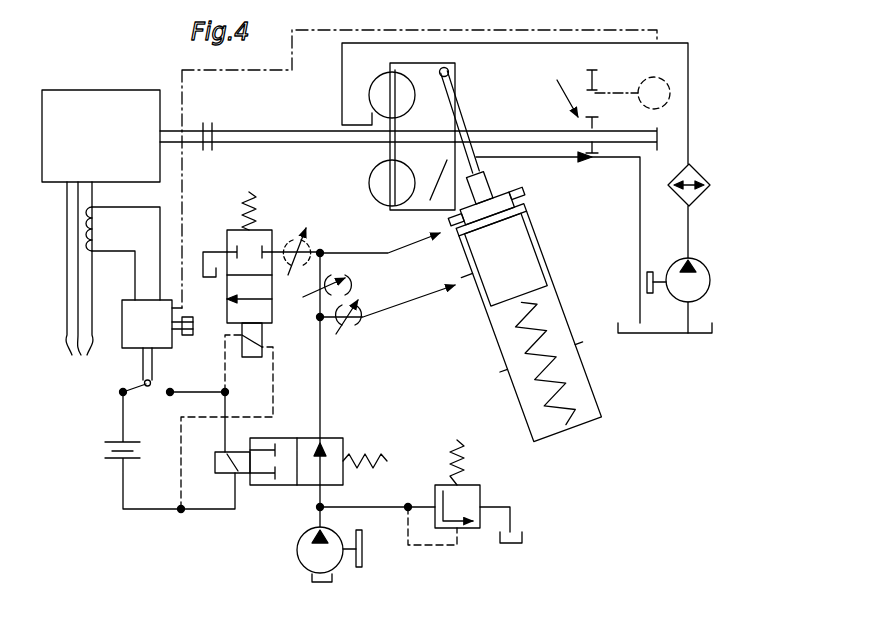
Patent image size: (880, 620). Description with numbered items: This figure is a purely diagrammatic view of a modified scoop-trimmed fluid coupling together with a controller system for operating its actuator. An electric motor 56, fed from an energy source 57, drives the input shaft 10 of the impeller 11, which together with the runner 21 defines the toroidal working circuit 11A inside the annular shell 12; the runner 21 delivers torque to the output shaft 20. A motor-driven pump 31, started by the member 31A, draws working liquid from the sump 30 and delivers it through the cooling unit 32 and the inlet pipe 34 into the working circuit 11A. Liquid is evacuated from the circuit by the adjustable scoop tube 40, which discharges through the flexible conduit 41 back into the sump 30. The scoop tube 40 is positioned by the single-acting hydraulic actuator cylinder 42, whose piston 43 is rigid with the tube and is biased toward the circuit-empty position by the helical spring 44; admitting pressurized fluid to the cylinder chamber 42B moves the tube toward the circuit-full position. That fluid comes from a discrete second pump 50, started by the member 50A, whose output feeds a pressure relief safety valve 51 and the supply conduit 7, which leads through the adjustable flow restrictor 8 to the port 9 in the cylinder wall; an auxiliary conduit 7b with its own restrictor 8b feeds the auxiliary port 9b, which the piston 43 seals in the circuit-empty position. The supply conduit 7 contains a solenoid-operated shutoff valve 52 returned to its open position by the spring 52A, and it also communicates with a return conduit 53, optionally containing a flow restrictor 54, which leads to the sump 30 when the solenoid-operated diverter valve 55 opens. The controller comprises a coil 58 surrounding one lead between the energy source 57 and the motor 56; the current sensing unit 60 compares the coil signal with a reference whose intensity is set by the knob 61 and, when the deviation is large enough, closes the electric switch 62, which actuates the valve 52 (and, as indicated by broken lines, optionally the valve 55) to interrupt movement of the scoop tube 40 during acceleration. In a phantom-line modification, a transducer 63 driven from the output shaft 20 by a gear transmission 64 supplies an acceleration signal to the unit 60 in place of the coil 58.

The supply conduit 7 is at (357, 253).
The auxiliary conduit 7b is at (394, 309).
The adjustable flow restrictor 8 is at (331, 275).
The adjustable flow restrictor 8b is at (349, 328).
The port 9 is at (440, 235).
The auxiliary port 9b is at (467, 292).
The input shaft 10 is at (246, 132).
The impeller 11 is at (371, 113).
The working circuit 11A is at (380, 88).
The annular shell 12 is at (463, 86).
The output shaft 20 is at (532, 132).
The runner 21 is at (402, 116).
The sump 30 is at (203, 251).
The pump 31 is at (700, 291).
The starting member 31A is at (650, 271).
The cooling unit 32 is at (698, 172).
The inlet pipe 34 is at (338, 82).
The scoop tube 40 is at (470, 120).
The flexible conduit 41 is at (603, 165).
The hydraulic actuator cylinder 42 is at (563, 315).
The cylinder chamber 42B is at (520, 195).
The piston 43 is at (532, 253).
The helical spring 44 is at (572, 413).
The second motor-driven pump 50 is at (292, 538).
The starting member 50A is at (366, 558).
The pressure relief safety valve 51 is at (473, 490).
The solenoid-operated valve 52 is at (333, 443).
The spring 52A is at (375, 443).
The return conduit 53 is at (318, 248).
The adjustable flow restrictor 54 is at (311, 291).
The solenoid-operated diverter valve 55 is at (262, 230).
The electric motor 56 is at (118, 153).
The energy source 57 is at (80, 287).
The coil 58 is at (98, 214).
The current sensing unit 60 is at (165, 337).
The knob 61 is at (193, 334).
The electric switch 62 is at (167, 374).
The transducer 63 is at (663, 80).
The gear transmission 64 is at (592, 103).